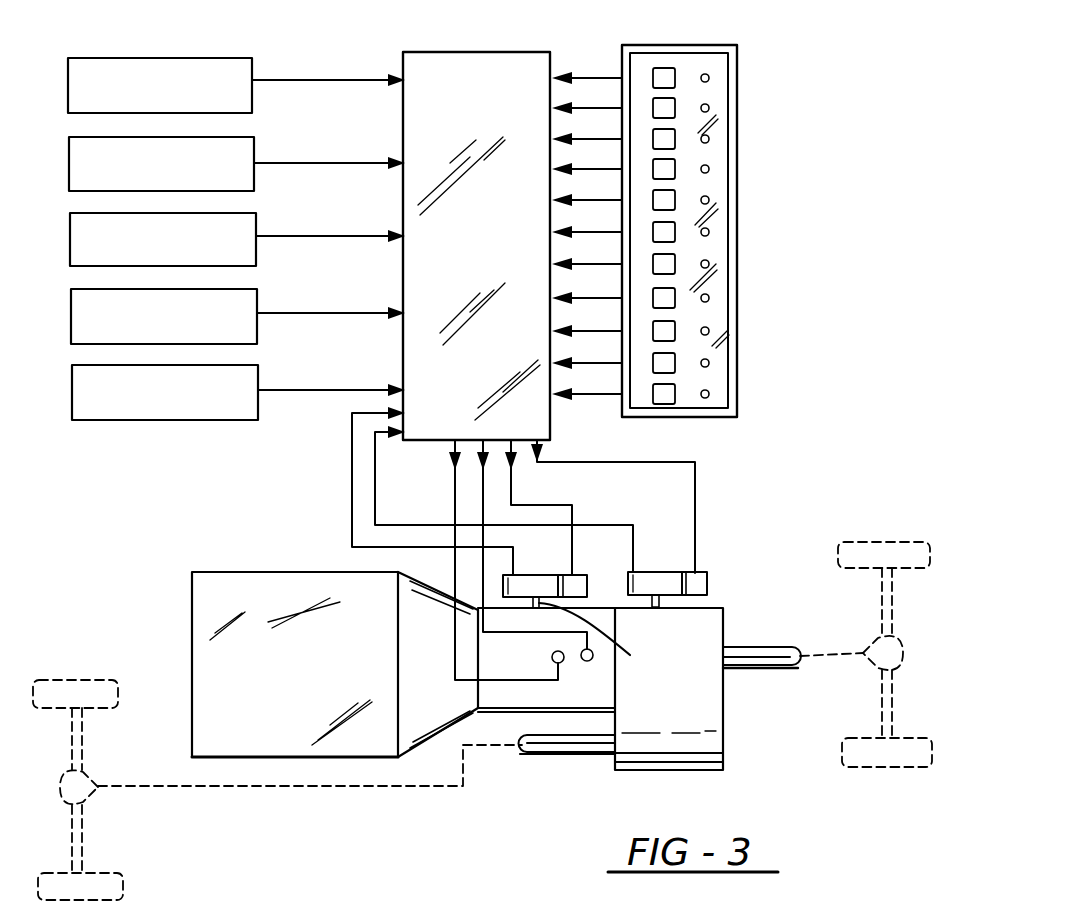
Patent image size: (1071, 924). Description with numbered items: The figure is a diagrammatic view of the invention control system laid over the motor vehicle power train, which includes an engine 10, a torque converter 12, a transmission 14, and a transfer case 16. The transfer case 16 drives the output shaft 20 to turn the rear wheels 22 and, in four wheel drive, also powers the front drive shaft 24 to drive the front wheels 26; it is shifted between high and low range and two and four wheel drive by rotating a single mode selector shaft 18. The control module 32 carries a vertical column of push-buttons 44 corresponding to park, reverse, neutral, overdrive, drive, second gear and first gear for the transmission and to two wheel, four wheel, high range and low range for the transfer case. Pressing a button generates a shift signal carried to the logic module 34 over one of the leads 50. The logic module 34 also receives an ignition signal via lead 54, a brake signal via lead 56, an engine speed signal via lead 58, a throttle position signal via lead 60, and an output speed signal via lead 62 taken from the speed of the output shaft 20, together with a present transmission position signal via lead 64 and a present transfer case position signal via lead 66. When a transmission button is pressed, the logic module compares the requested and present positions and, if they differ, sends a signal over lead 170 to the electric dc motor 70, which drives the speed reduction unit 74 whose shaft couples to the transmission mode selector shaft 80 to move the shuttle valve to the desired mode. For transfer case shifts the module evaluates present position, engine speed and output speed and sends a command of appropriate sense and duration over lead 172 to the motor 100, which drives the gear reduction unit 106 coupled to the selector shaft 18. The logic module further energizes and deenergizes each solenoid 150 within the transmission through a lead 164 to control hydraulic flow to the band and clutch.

The engine 10 is at (334, 679).
The torque converter 12 is at (437, 672).
The transmission 14 is at (520, 669).
The transfer case 16 is at (690, 702).
The mode selector shaft 18 is at (658, 600).
The output shaft 20 is at (763, 668).
The rear wheels 22 is at (882, 552).
The front drive shaft 24 is at (551, 755).
The front wheels 26 is at (76, 697).
The control module 32 is at (750, 133).
The logic module 34 is at (469, 44).
The push-buttons 44 is at (676, 78).
The leads 50 is at (602, 77).
The lead 54 is at (323, 80).
The lead 56 is at (325, 163).
The lead 58 is at (325, 236).
The lead 60 is at (325, 313).
The lead 62 is at (323, 390).
The lead 64 is at (352, 476).
The lead 66 is at (375, 484).
The electric dc motor 70 is at (563, 567).
The speed reduction unit 74 is at (556, 578).
The mode selector shaft 80 is at (597, 640).
The electric dc motor 100 is at (708, 560).
The gear reduction unit 106 is at (662, 572).
The solenoid 150 is at (597, 697).
The lead 164 is at (483, 508).
The lead 170 is at (572, 556).
The lead 172 is at (696, 484).